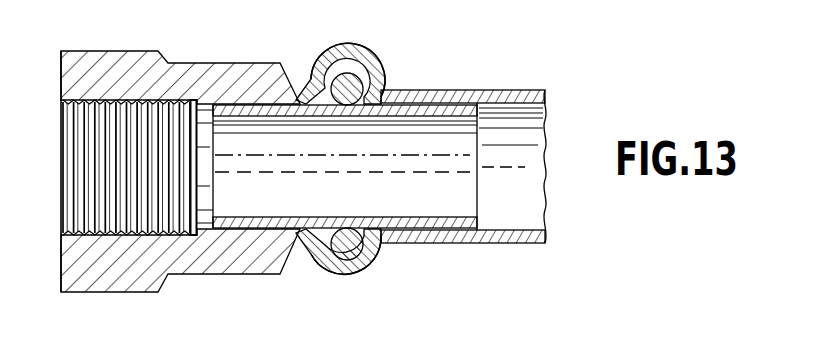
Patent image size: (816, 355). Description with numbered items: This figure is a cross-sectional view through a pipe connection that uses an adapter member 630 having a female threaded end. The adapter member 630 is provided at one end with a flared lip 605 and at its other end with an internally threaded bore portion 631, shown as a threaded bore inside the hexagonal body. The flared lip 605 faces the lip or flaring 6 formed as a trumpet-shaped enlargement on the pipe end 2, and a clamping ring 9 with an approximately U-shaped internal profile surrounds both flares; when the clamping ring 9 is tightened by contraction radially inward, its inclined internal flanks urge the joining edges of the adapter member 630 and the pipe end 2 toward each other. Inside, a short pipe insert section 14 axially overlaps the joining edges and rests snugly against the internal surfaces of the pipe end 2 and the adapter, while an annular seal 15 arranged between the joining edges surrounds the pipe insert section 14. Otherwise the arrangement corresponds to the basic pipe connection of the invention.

The pipe end 2 is at (503, 91).
The lip or flaring 6 is at (372, 84).
The clamping ring 9 is at (367, 42).
The pipe insert section 14 is at (456, 203).
The annular seal 15 is at (340, 121).
The flared lip 605 is at (320, 62).
The adapter member 630 is at (130, 296).
The internally threaded bore portion 631 is at (80, 215).